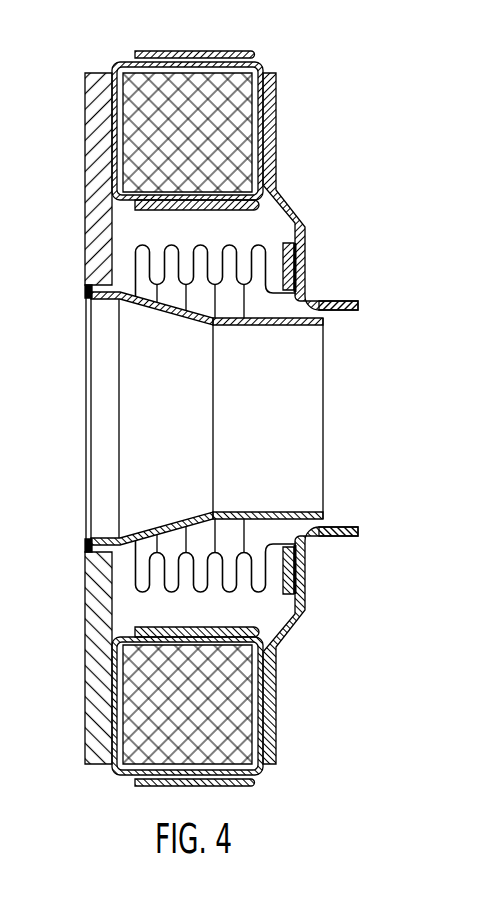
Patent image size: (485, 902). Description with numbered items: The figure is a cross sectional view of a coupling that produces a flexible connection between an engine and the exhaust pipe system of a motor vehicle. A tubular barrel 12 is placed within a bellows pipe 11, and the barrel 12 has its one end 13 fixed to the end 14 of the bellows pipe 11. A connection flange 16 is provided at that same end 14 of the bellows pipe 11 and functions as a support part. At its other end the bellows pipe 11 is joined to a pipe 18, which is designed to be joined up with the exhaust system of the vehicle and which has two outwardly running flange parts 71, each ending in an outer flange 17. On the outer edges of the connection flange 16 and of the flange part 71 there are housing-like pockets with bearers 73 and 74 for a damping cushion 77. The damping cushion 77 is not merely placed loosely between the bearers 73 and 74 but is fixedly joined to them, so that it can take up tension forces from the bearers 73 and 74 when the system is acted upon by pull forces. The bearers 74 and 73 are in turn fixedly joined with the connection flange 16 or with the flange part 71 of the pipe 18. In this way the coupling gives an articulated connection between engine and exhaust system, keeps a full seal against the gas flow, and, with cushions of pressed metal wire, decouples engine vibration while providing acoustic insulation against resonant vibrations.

The bellows pipe 11 is at (147, 582).
The tubular barrel 12 is at (258, 517).
The end of the barrel 13 is at (93, 294).
The end of the bellows pipe 14 is at (127, 291).
The connection flange 16 is at (90, 232).
The mounting flange 17 is at (303, 297).
The pipe 18 is at (305, 263).
The flange part 71 is at (298, 204).
The bearer 73 is at (243, 88).
The bearer 74 is at (131, 110).
The damping cushion 77 is at (190, 90).